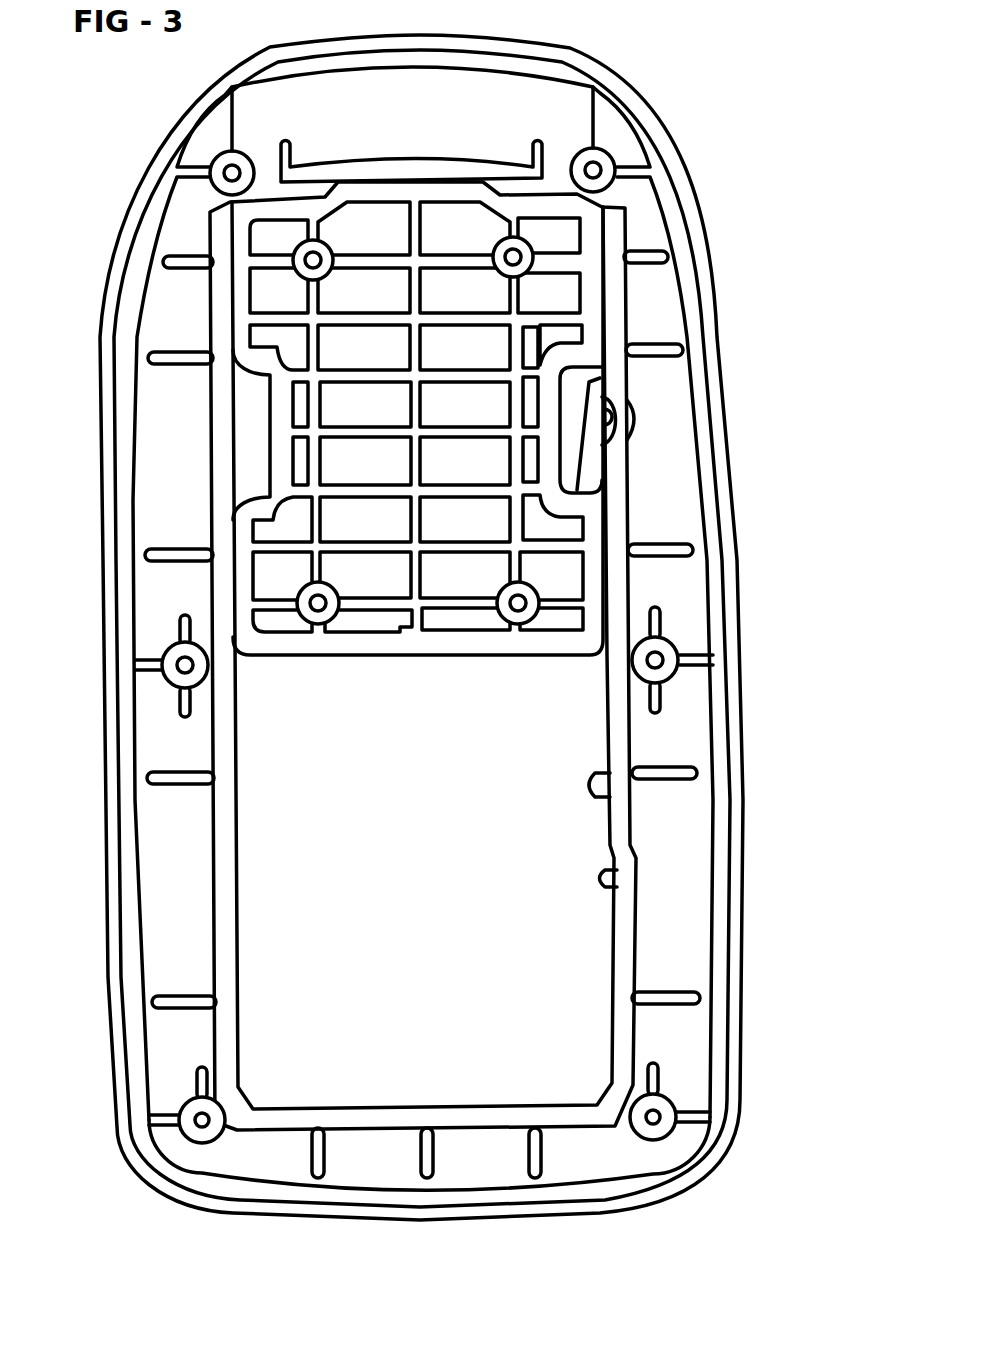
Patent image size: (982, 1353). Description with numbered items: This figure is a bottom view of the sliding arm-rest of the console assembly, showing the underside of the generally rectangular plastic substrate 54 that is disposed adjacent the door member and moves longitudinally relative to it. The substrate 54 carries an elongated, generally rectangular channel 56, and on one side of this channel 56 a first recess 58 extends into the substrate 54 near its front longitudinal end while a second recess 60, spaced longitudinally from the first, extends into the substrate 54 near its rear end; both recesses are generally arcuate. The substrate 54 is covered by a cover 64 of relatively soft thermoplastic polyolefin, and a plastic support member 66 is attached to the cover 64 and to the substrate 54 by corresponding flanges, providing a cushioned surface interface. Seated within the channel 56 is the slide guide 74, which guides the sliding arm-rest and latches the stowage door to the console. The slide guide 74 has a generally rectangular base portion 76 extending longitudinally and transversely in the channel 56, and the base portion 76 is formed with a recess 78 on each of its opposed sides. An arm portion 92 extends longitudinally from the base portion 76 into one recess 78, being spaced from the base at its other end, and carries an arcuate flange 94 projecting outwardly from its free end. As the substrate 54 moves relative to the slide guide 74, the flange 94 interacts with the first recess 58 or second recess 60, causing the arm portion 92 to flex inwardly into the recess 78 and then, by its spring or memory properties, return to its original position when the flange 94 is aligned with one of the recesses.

The substrate 54 is at (677, 840).
The channel 56 is at (650, 768).
The first recess 58 is at (603, 402).
The second recess 60 is at (613, 880).
The cover 64 is at (732, 558).
The support member 66 is at (713, 503).
The slide guide 74 is at (601, 298).
The base portion 76 is at (560, 287).
The recess 78 is at (563, 388).
The arm portion 92 is at (592, 445).
The flange 94 is at (600, 428).